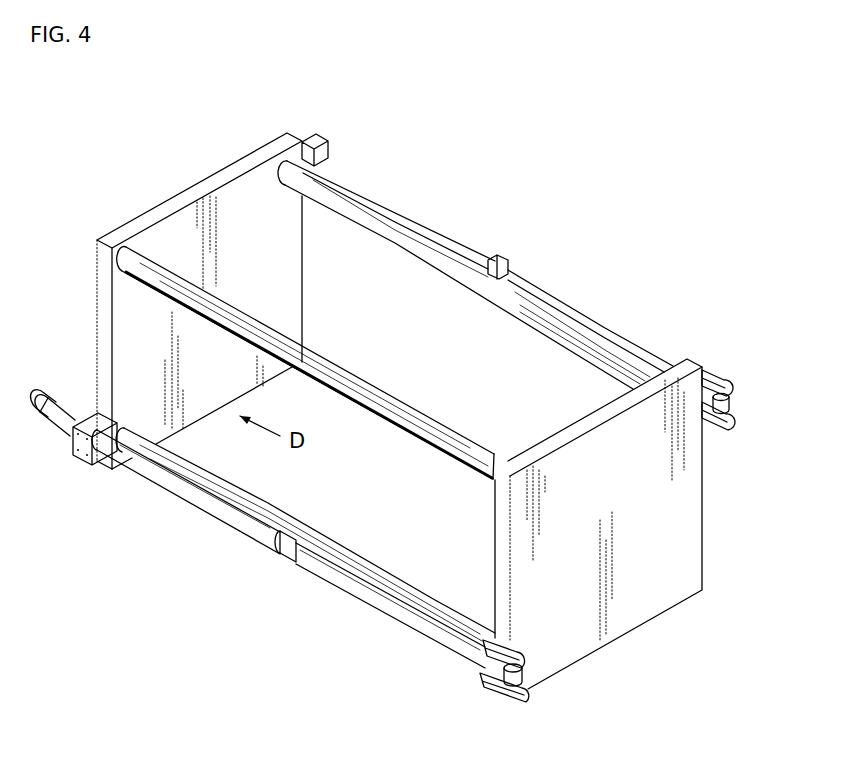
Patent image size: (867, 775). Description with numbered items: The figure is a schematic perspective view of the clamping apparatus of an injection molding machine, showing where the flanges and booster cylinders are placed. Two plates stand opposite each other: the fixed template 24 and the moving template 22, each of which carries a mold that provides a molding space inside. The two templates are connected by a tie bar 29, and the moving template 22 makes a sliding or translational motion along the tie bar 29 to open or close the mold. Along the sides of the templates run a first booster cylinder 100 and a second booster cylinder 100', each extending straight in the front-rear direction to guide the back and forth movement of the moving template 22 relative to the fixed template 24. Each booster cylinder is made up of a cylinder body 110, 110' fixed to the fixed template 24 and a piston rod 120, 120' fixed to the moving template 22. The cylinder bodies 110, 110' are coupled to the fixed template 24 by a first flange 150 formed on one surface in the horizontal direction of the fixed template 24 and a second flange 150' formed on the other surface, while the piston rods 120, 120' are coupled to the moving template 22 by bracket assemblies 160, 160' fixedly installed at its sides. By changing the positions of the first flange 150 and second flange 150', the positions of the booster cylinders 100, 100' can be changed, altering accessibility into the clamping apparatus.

The moving template 22 is at (577, 427).
The fixed template 24 is at (174, 200).
The tie bar 29 is at (387, 227).
The first booster cylinder 100 is at (244, 572).
The second booster cylinder 100' is at (546, 247).
The cylinder body 110 is at (186, 494).
The cylinder body 110' is at (386, 211).
The piston rod 120 is at (390, 605).
The piston rod 120' is at (590, 318).
The first flange 150 is at (74, 449).
The second flange 150' is at (339, 136).
The bracket assembly 160 is at (464, 686).
The bracket assembly 160' is at (748, 382).